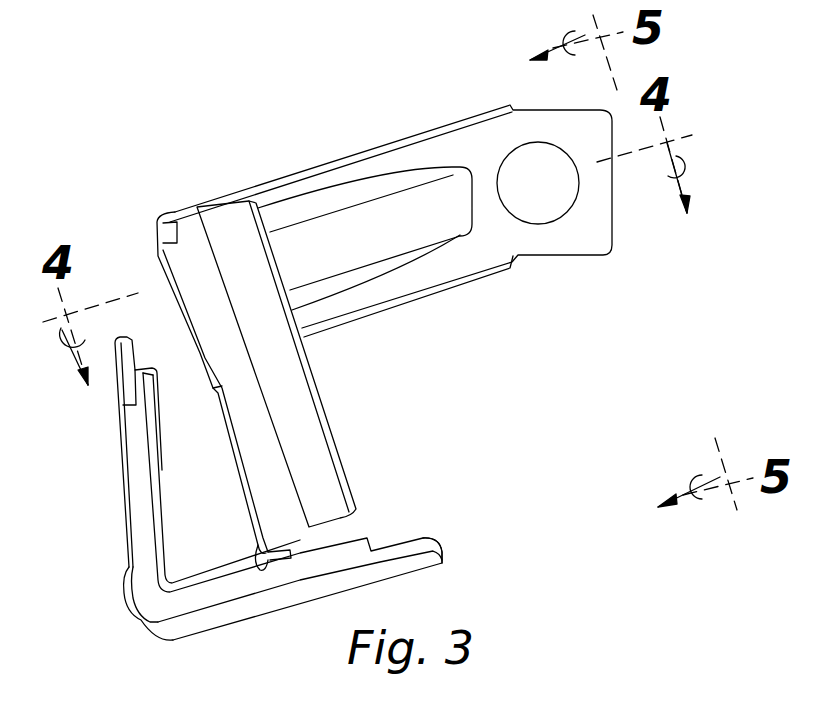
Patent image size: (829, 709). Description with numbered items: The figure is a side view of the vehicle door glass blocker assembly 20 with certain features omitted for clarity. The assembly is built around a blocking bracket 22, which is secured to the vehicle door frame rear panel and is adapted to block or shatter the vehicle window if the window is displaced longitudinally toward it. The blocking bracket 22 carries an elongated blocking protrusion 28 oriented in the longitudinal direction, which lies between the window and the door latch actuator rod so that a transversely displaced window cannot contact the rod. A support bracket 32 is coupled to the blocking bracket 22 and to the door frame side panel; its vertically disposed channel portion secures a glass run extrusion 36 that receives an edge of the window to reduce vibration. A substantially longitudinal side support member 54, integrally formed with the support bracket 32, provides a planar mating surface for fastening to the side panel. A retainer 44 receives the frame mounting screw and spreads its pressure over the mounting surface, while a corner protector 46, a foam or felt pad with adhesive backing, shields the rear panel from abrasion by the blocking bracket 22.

The vehicle door glass blocker assembly 20 is at (170, 168).
The blocking bracket 22 is at (138, 487).
The blocking protrusion 28 is at (412, 560).
The support bracket 32 is at (226, 345).
The glass run extrusion 36 is at (302, 440).
The retainer 44 is at (137, 392).
The corner protector 46 is at (130, 604).
The side support member 54 is at (468, 152).